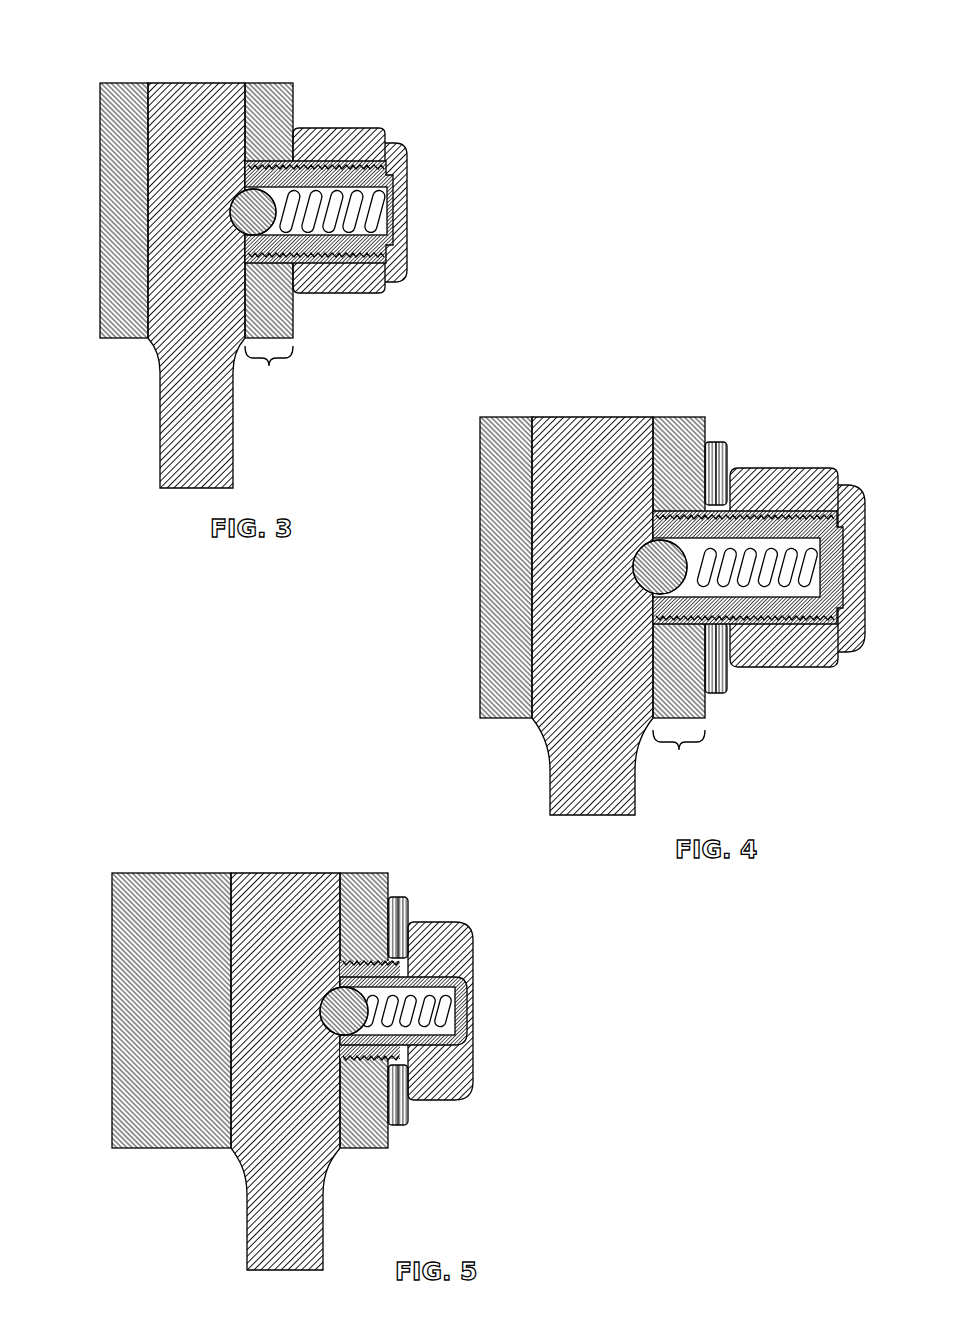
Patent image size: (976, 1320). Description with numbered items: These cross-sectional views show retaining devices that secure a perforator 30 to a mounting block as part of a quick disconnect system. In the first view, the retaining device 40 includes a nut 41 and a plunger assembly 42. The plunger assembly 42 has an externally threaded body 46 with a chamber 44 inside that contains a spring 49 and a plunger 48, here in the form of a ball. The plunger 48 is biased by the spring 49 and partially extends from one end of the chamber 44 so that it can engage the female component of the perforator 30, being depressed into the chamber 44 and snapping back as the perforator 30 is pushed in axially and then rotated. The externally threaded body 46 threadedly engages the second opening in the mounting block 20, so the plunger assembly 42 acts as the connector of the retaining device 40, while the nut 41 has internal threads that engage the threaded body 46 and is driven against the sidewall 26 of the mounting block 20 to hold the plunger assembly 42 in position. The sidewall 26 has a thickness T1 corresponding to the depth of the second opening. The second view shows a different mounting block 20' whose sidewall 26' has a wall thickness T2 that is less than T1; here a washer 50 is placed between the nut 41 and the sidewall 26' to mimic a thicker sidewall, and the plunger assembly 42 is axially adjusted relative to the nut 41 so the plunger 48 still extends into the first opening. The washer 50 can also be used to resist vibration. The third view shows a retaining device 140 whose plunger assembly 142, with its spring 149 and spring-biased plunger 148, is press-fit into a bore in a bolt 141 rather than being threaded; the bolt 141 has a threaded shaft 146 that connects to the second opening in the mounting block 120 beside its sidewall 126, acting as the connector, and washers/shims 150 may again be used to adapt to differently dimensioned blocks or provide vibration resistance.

In FIG. 3, the mounting block 20 is at (147, 210).
In FIG. 3, the sidewall 26 is at (264, 180).
In FIG. 3, the perforator 30 is at (160, 413).
In FIG. 4, the perforator 30 is at (549, 784).
In FIG. 5, the perforator 30 is at (244, 1231).
In FIG. 3, the retaining device 40 is at (432, 80).
In FIG. 4, the retaining device 40 is at (866, 425).
In FIG. 3, the nut 41 is at (346, 126).
In FIG. 4, the nut 41 is at (816, 666).
In FIG. 3, the plunger assembly 42 is at (413, 246).
In FIG. 4, the plunger assembly 42 is at (848, 603).
In FIG. 3, the chamber 44 is at (396, 177).
In FIG. 4, the chamber 44 is at (820, 564).
In FIG. 3, the externally threaded body 46 is at (352, 262).
In FIG. 4, the externally threaded body 46 is at (791, 512).
In FIG. 3, the plunger 48 is at (270, 227).
In FIG. 4, the plunger 48 is at (683, 583).
In FIG. 3, the spring 49 is at (393, 211).
In FIG. 4, the spring 49 is at (840, 573).
In FIG. 4, the washer 50 is at (729, 447).
In FIG. 3, the thickness T1 is at (269, 376).
In FIG. 4, the mounting block 20' is at (540, 567).
In FIG. 4, the sidewall 26' is at (675, 537).
In FIG. 4, the wall thickness T2 is at (679, 760).
In FIG. 5, the mounting block 120 is at (112, 975).
In FIG. 5, the sidewall 126 is at (360, 873).
In FIG. 5, the retaining device 140 is at (115, 840).
In FIG. 5, the bolt 141 is at (445, 1100).
In FIG. 5, the plunger assembly 142 is at (466, 1029).
In FIG. 5, the threaded shaft 146 is at (348, 1053).
In FIG. 5, the plunger 148 is at (323, 1000).
In FIG. 5, the spring 149 is at (461, 998).
In FIG. 5, the washers/shims 150 is at (412, 906).